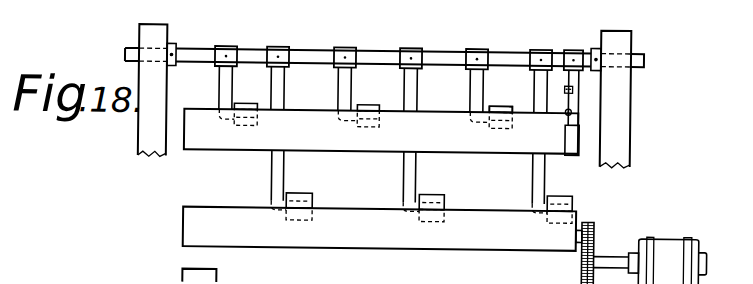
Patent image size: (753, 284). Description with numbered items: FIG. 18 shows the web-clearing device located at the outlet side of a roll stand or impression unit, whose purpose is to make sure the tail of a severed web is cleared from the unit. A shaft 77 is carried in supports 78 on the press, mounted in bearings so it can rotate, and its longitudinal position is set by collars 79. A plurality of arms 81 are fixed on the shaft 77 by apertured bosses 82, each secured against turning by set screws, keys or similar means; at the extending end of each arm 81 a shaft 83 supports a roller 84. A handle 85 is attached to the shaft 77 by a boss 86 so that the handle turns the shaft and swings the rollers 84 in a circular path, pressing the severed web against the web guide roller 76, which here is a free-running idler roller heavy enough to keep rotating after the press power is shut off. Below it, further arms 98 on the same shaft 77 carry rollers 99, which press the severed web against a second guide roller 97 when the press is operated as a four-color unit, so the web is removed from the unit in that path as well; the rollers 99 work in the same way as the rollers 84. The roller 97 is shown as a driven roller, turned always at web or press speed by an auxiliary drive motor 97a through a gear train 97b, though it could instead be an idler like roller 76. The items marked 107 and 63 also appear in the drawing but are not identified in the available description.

The roller 76 is at (388, 150).
The shaft 77 is at (437, 51).
The supports 78 is at (140, 151).
The collars 79 is at (171, 47).
The arms 81 is at (470, 89).
The apertured bosses 82 is at (341, 48).
The shaft 83 is at (352, 108).
The roller 84 is at (506, 100).
The handle 85 is at (571, 153).
The boss 86 is at (568, 48).
The driven roller 97 is at (198, 224).
The auxiliary drive motor 97a is at (672, 250).
The gear train 97b is at (598, 240).
The arms 98 is at (412, 170).
The rollers 99 is at (438, 198).
The element 107 is at (131, 277).
The element 63 is at (219, 281).